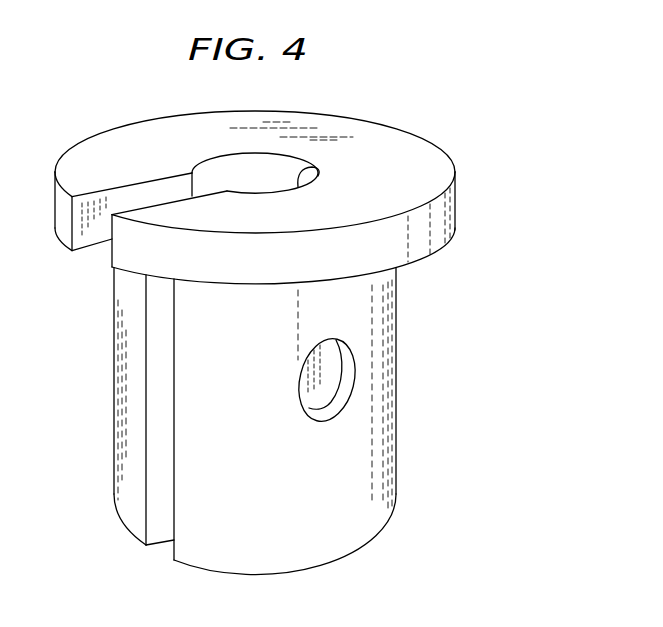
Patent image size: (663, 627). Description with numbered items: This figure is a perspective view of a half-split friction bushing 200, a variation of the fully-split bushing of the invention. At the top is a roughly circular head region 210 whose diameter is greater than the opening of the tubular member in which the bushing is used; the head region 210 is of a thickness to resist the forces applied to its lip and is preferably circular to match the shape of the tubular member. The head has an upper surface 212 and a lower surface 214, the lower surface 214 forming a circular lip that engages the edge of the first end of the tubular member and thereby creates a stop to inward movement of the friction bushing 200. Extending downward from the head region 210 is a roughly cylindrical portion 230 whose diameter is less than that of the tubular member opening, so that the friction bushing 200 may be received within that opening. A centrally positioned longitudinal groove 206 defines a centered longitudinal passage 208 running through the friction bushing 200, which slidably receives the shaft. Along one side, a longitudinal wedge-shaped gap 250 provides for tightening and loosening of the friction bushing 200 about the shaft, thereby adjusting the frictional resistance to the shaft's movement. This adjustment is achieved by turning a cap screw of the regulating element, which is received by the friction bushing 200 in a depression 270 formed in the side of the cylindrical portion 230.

The half-split bushing 200 is at (436, 63).
The longitudinal groove 206 is at (320, 170).
The longitudinal passage 208 is at (265, 160).
The head region 210 is at (458, 135).
The upper surface 212 is at (153, 140).
The lower surface 214 is at (440, 251).
The cylindrical portion 230 is at (413, 265).
The wedge-shaped gap 250 is at (163, 446).
The depression 270 is at (333, 409).